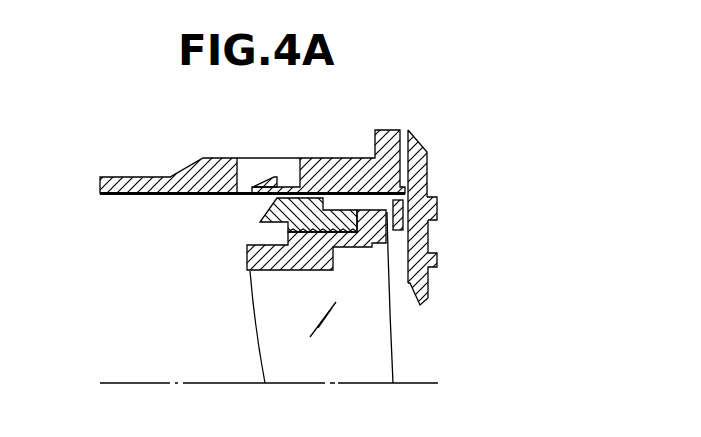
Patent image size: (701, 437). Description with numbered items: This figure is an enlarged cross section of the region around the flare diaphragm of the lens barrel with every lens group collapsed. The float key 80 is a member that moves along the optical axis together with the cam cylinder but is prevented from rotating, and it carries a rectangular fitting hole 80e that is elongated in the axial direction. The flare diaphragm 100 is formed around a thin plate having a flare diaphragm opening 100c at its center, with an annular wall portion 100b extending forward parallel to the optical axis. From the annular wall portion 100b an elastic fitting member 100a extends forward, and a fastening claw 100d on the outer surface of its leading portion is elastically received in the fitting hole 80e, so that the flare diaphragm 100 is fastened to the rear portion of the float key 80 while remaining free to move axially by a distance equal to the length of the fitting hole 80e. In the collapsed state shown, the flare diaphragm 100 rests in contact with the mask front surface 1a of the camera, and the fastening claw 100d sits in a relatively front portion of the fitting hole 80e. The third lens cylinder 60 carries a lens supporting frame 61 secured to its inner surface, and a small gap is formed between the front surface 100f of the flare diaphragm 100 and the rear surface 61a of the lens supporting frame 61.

The float key 80 is at (205, 178).
The rectangular fitting hole 80e is at (253, 173).
The fitting member 100a is at (330, 175).
The fastening claw 100d is at (267, 195).
The third lens cylinder 60 is at (262, 222).
The lens supporting frame 61 is at (250, 260).
The rear surface of the lens supporting frame 61a is at (377, 250).
The flare diaphragm 100 is at (432, 262).
The mask front surface 1a is at (417, 172).
The annular wall portion 100b is at (430, 188).
The front surface of the flare diaphragm 100f is at (437, 210).
The flare diaphragm opening 100c is at (405, 307).